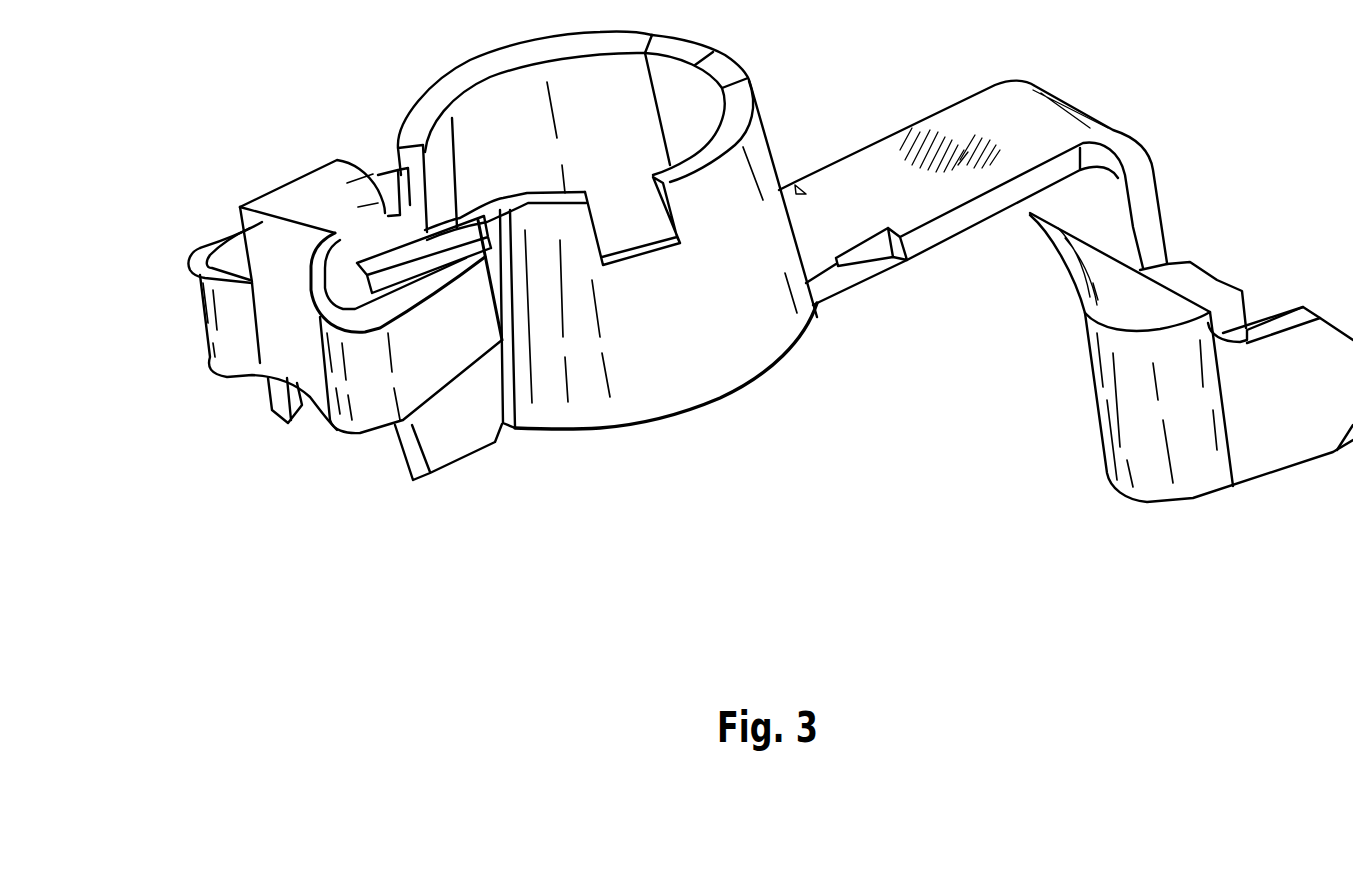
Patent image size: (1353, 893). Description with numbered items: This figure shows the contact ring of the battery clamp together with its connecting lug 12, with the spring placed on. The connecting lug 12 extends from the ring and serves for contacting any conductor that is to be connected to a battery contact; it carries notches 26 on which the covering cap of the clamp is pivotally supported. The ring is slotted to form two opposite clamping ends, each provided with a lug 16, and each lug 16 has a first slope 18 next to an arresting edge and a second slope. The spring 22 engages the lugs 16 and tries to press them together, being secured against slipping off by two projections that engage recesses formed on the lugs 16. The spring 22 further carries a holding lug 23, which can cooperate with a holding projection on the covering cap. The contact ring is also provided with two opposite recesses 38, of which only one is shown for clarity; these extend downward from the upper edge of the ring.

The connecting lug 12 is at (1200, 478).
The lug 16 is at (327, 190).
The first slope 18 is at (297, 405).
The spring 22 is at (258, 360).
The holding lug 23 is at (273, 237).
The notches 26 is at (868, 257).
The recesses 38 is at (662, 205).